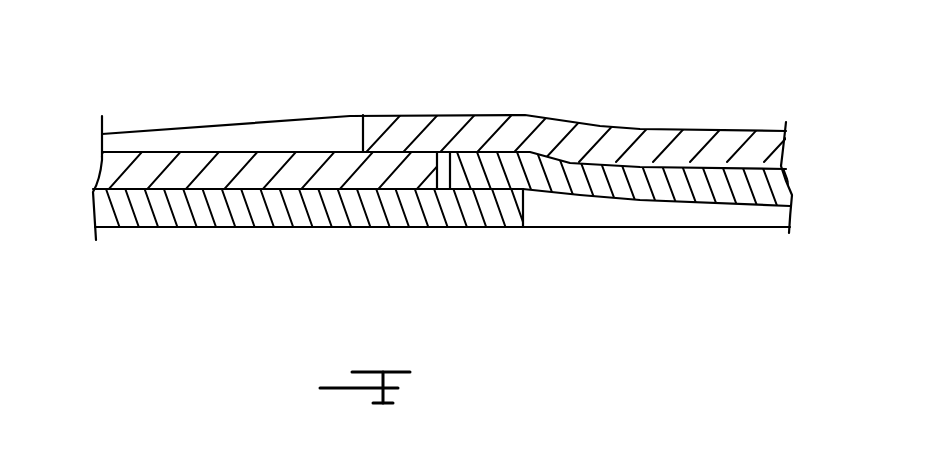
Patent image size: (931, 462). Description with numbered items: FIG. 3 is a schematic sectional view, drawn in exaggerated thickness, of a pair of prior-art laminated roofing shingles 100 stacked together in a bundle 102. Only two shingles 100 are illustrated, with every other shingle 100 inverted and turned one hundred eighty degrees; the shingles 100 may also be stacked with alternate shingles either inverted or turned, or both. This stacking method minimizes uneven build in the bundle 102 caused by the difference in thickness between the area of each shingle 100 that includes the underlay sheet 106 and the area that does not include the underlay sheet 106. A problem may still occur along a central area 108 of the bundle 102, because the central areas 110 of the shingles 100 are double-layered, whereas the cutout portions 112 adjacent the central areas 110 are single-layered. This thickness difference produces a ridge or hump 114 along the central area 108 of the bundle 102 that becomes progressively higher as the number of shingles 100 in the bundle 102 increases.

The laminated roofing shingle 100 is at (642, 138).
The bundle 102 is at (144, 44).
The underlay sheet 106 is at (113, 177).
The central area of the bundle 108 is at (523, 66).
The central area of the shingle 110 is at (437, 110).
The cutout portion 112 is at (363, 110).
The ridge or hump 114 is at (513, 116).